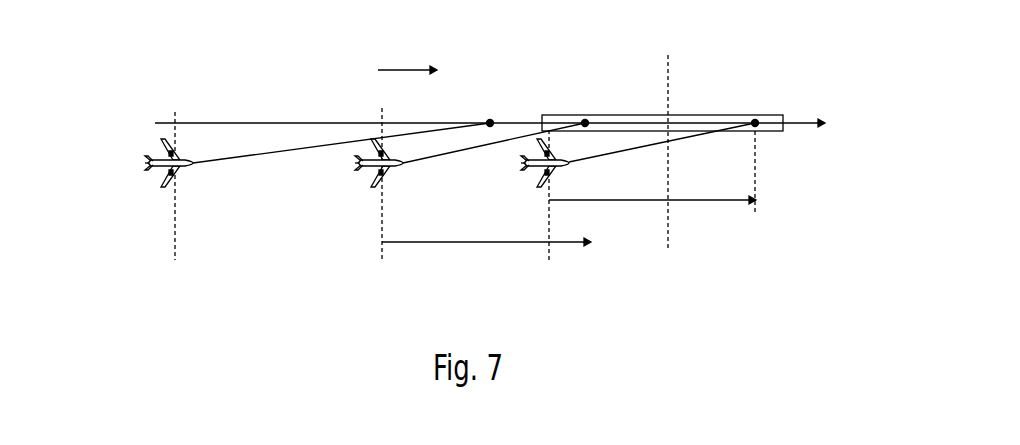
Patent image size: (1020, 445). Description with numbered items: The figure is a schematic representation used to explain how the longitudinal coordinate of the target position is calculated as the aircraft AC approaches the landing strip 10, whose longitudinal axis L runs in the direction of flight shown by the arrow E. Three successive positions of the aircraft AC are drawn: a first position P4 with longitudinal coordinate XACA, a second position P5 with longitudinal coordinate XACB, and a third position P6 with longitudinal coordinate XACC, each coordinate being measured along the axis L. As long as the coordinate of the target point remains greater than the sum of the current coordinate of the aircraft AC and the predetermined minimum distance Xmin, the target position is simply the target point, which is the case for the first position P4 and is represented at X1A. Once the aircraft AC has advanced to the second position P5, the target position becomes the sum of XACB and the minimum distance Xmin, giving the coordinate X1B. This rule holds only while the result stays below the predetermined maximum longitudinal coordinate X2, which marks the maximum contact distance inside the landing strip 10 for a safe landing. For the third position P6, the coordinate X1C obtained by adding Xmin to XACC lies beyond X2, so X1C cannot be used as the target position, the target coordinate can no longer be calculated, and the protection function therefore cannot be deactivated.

The landing strip 10 is at (631, 115).
The longitudinal axis L is at (290, 122).
The arrow illustrating the direction of flight E is at (405, 70).
The aircraft AC is at (185, 169).
The first position P4 is at (134, 170).
The second position P5 is at (342, 169).
The third position P6 is at (506, 167).
The target point X1 represented at X1A is at (488, 105).
The target position coordinate X1B is at (585, 105).
The coordinate X1C is at (760, 149).
The maximum contact distance X2 is at (669, 152).
The longitudinal coordinate of the first position XACA is at (175, 202).
The longitudinal coordinate of the second position XACB is at (382, 200).
The longitudinal coordinate of the third position XACC is at (549, 211).
The minimum longitudinal distance Xmin is at (569, 209).